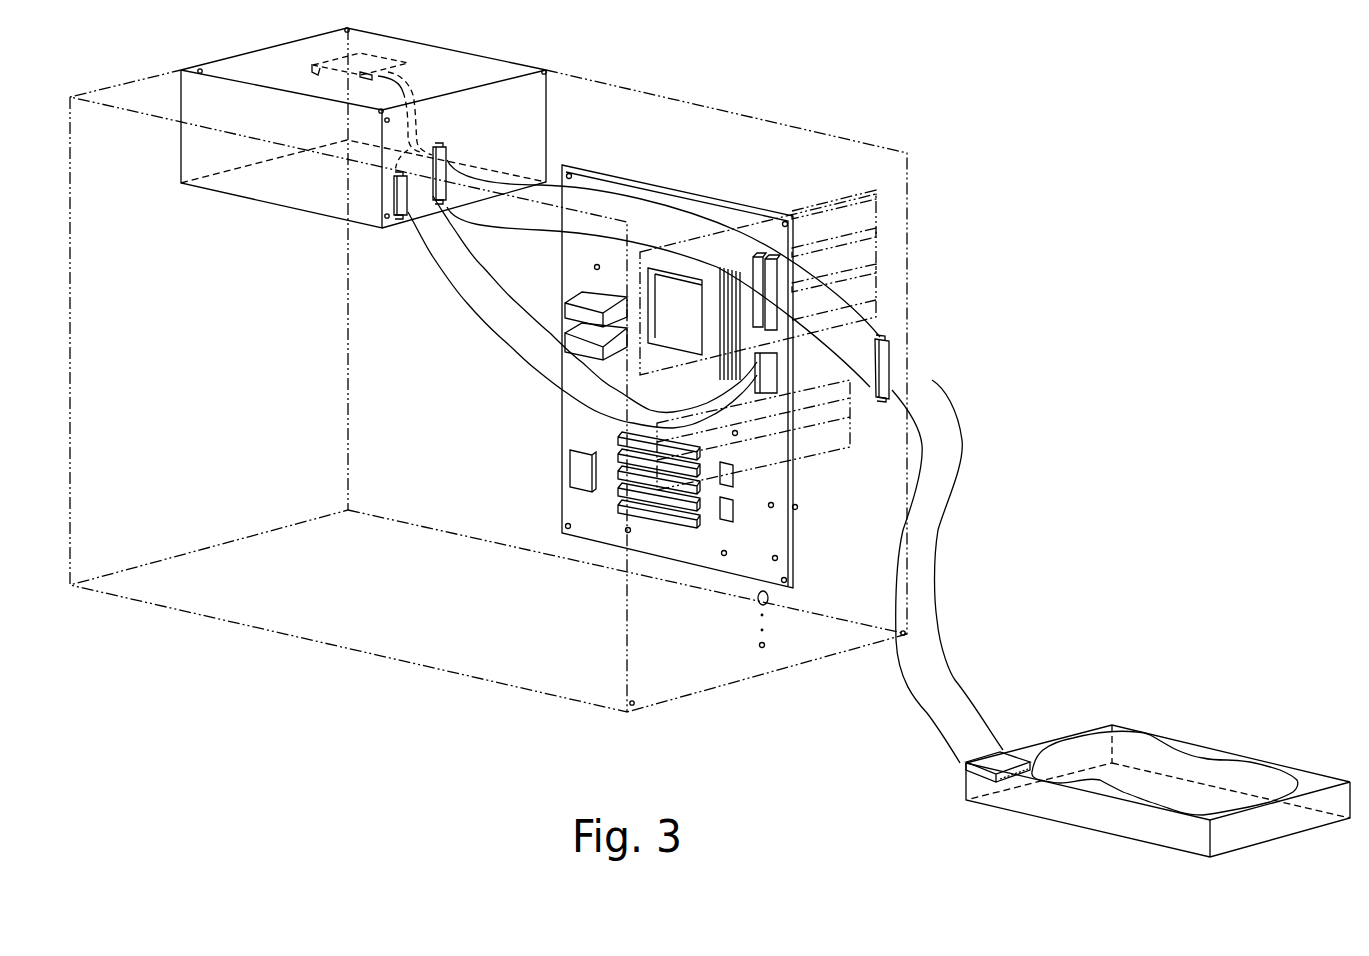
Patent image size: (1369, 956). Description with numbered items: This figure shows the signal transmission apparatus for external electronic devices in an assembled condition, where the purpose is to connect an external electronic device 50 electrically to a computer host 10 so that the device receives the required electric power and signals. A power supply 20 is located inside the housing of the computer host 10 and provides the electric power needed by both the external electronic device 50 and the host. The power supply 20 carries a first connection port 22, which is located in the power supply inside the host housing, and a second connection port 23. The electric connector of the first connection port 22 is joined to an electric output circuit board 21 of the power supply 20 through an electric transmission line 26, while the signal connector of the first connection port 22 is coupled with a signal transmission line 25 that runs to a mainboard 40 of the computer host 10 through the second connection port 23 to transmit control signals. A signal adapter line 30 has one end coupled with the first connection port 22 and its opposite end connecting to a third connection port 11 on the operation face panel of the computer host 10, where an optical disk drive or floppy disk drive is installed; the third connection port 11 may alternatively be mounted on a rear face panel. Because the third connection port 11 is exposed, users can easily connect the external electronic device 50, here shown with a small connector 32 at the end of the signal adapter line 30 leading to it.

The computer host 10 is at (655, 88).
The third connection port 11 is at (897, 340).
The power supply 20 is at (268, 207).
The electric output circuit board 21 is at (325, 62).
The first connection port 22 is at (438, 148).
The second connection port 23 is at (400, 222).
The signal transmission line 25 is at (497, 318).
The electric transmission line 26 is at (410, 90).
The signal adapter line 30 is at (607, 207).
The connector 32 is at (966, 781).
The mainboard 40 is at (553, 480).
The external electronic device 50 is at (1217, 743).